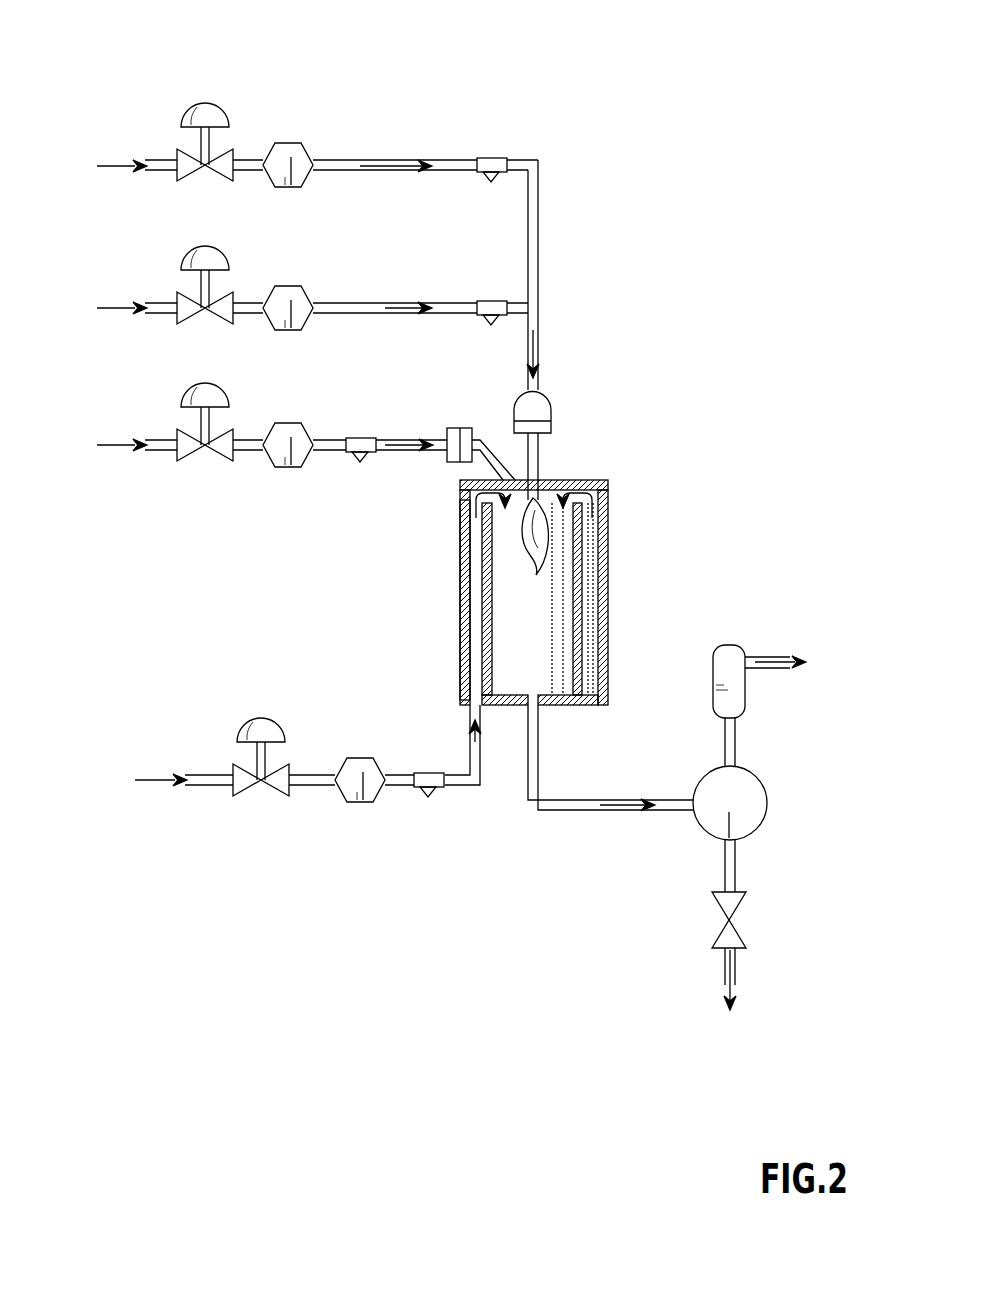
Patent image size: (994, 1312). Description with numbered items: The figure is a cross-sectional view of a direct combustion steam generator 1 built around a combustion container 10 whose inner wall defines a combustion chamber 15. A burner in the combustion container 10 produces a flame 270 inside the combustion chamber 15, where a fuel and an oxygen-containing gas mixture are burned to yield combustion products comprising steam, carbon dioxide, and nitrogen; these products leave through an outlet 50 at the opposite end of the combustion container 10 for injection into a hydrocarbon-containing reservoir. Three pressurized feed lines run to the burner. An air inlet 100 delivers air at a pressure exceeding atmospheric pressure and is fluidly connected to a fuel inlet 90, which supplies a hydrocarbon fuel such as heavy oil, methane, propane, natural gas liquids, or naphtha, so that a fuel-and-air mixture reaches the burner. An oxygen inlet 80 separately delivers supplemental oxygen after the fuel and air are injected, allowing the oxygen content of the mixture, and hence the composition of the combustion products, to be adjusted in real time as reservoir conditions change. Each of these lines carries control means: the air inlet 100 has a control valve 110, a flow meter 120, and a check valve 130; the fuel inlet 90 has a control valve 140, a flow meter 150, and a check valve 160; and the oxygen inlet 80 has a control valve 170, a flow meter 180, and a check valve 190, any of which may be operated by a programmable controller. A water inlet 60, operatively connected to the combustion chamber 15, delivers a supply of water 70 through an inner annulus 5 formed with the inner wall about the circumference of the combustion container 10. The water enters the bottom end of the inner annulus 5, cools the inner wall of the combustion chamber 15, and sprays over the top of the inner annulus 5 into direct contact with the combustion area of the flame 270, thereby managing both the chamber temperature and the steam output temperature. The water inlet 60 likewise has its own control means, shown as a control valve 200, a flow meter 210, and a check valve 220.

The steam generator 1 is at (700, 85).
The inner annulus 5 is at (475, 565).
The combustion container 10 is at (585, 480).
The combustion chamber 15 is at (502, 600).
The outlet 50 is at (530, 708).
The water inlet 60 is at (470, 712).
The water 70 is at (212, 787).
The oxygen inlet 80 is at (165, 450).
The fuel inlet 90 is at (165, 312).
The air inlet 100 is at (165, 170).
The control valve 110 is at (210, 125).
The flow meter 120 is at (290, 143).
The check valve 130 is at (488, 157).
The control valve 140 is at (210, 268).
The flow meter 150 is at (290, 287).
The check valve 160 is at (488, 300).
The control valve 170 is at (210, 405).
The flow meter 180 is at (290, 422).
The check valve 190 is at (360, 436).
The control valve 200 is at (256, 718).
The flow meter 210 is at (343, 803).
The check valve 220 is at (428, 796).
The flame 270 is at (540, 545).